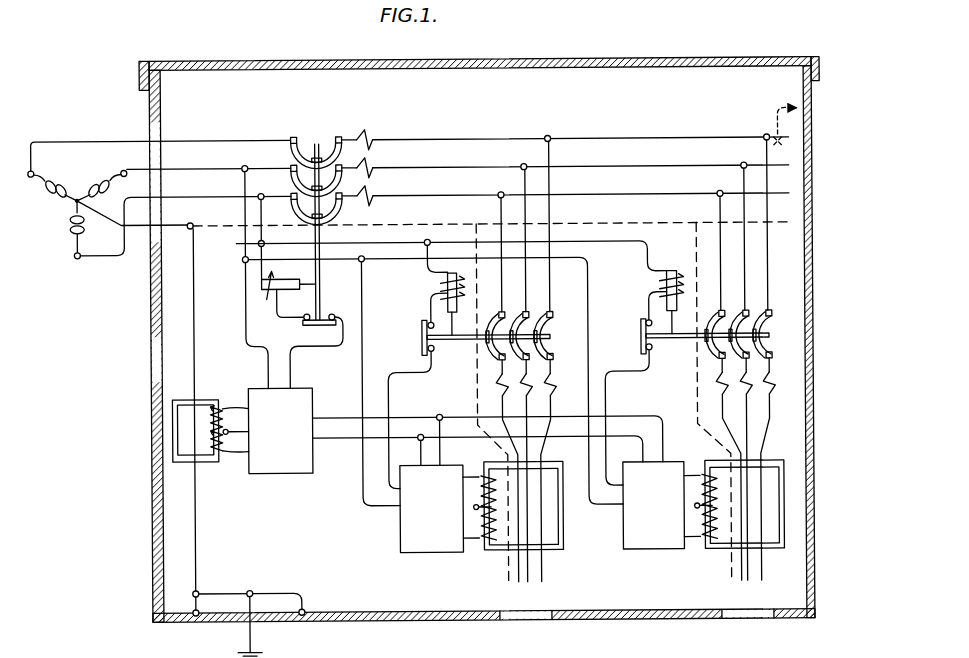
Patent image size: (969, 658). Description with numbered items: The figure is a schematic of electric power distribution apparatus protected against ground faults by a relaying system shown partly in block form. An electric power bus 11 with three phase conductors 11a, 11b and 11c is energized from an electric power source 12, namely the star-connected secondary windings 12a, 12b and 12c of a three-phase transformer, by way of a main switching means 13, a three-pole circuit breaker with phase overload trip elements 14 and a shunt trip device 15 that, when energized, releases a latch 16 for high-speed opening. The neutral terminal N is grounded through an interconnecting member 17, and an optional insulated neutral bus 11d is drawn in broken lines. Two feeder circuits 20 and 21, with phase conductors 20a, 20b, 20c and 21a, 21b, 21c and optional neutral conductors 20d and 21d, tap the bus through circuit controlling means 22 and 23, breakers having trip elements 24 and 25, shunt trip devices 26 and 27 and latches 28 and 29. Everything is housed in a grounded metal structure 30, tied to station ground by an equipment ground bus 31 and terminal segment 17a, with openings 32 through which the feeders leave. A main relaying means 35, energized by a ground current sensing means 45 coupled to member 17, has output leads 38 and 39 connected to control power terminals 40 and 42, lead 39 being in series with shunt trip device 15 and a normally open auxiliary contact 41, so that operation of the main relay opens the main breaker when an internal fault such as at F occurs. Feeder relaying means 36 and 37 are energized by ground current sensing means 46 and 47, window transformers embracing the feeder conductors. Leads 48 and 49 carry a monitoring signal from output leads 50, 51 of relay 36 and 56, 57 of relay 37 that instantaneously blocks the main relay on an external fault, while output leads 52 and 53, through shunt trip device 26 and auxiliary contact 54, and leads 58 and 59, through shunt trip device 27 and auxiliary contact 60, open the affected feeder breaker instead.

The electric power bus 11 is at (410, 347).
The phase conductor 11a is at (432, 139).
The phase conductor 11b is at (432, 167).
The phase conductor 11c is at (432, 195).
The insulated neutral bus 11d is at (426, 218).
The electric power source 12 is at (78, 202).
The secondary winding 12a is at (52, 174).
The secondary winding 12b is at (102, 173).
The secondary winding 12c is at (84, 236).
The neutral terminal N is at (74, 200).
The main switching means 13 is at (351, 216).
The phase overload trip elements 14 is at (372, 133).
The shunt trip device 15 is at (303, 249).
The latch 16 is at (321, 283).
The interconnecting member 17 is at (195, 329).
The terminal segment 17a is at (249, 638).
The feeder circuit 20 is at (530, 499).
The phase conductor 20a is at (542, 563).
The phase conductor 20b is at (530, 578).
The phase conductor 20c is at (515, 563).
The neutral conductor 20d is at (487, 585).
The feeder circuit 21 is at (751, 498).
The phase conductor 21a is at (762, 563).
The phase conductor 21b is at (750, 578).
The phase conductor 21c is at (738, 563).
The neutral conductor 21d is at (710, 583).
The circuit controlling means 22 is at (532, 268).
The circuit controlling means 23 is at (751, 267).
The phase overload trip elements 24 is at (554, 380).
The phase overload trip elements 25 is at (773, 380).
The shunt trip device 26 is at (477, 313).
The shunt trip device 27 is at (696, 311).
The latch 28 is at (462, 339).
The latch 29 is at (680, 339).
The grounded metal structure 30 is at (151, 495).
The equipment ground bus 31 is at (272, 592).
The openings 32 is at (520, 619).
The main relaying means 35 is at (272, 472).
The feeder relaying means 36 is at (399, 537).
The feeder relaying means 37 is at (622, 533).
The output lead 38 is at (246, 373).
The output lead 39 is at (290, 373).
The control power terminal 40 is at (244, 258).
The auxiliary contact 41 is at (303, 326).
The control power terminal 42 is at (237, 242).
The ground current sensing means 45 is at (210, 460).
The ground current sensing means 46 is at (560, 462).
The ground current sensing means 47 is at (777, 462).
The lead 48 is at (337, 417).
The lead 49 is at (338, 437).
The output lead 50 is at (441, 452).
The output lead 51 is at (418, 452).
The output lead 52 is at (364, 355).
The output lead 53 is at (388, 393).
The auxiliary contact 54 is at (422, 330).
The output lead 56 is at (664, 445).
The output lead 57 is at (640, 450).
The output lead 58 is at (590, 350).
The output lead 59 is at (607, 393).
The auxiliary contact 60 is at (641, 330).
The internal arcing ground fault F is at (780, 114).